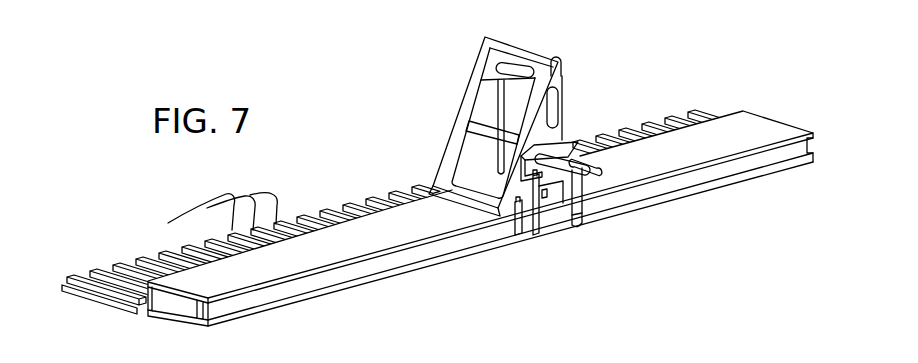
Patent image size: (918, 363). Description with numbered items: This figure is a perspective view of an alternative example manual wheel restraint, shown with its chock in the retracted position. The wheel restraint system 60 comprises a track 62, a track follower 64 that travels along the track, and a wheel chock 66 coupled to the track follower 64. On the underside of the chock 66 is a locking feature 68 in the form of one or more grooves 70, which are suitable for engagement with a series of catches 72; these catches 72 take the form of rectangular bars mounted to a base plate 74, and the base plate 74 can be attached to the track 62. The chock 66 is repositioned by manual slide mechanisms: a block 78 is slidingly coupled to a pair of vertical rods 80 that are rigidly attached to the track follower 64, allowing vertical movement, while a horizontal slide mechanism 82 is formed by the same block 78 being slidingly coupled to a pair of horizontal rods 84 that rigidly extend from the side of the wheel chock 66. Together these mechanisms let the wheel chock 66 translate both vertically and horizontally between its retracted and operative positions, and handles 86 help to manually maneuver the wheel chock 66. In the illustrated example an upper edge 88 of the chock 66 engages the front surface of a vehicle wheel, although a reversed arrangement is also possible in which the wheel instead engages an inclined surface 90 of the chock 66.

The wheel restraint system 60 is at (686, 63).
The track 62 is at (712, 140).
The track follower 64 is at (563, 236).
The wheel chock 66 is at (563, 82).
The locking feature 68 is at (544, 214).
The grooves 70 is at (521, 248).
The catches 72 is at (417, 207).
The base plate 74 is at (110, 301).
The block 78 is at (567, 139).
The vertical rods 80 is at (513, 241).
The horizontal slide mechanism 82 is at (610, 159).
The horizontal rods 84 is at (600, 176).
The handles 86 is at (497, 88).
The upper edge 88 is at (561, 59).
The inclined surface 90 is at (440, 148).